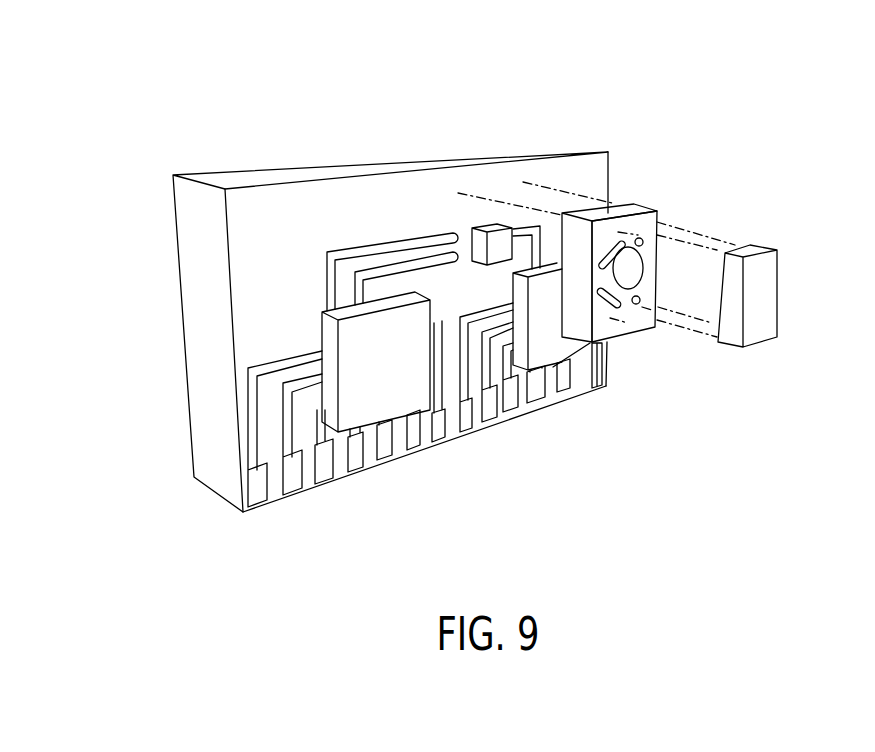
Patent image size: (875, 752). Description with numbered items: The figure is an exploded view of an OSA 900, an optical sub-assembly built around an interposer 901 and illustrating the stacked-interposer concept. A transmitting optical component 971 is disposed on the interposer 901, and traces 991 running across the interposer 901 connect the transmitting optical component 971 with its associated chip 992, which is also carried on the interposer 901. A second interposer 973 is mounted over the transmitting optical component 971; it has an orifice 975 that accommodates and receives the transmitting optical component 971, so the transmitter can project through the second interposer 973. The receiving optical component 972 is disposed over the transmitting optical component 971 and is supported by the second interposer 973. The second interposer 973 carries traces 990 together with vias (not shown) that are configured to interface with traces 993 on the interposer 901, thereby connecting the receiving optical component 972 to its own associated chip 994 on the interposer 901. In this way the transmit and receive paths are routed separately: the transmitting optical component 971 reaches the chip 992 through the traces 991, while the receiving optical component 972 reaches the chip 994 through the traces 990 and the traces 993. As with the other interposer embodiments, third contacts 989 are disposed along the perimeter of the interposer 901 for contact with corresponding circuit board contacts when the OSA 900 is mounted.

The OSA 900 is at (192, 113).
The interposer 901 is at (207, 437).
The third contacts 989 is at (262, 501).
The chip 994 is at (372, 403).
The traces 993 is at (453, 232).
The transmitting optical component 971 is at (478, 226).
The traces 991 is at (525, 230).
The chip 992 is at (545, 350).
The traces 990 is at (600, 256).
The second interposer 973 is at (657, 214).
The orifice 975 is at (628, 282).
The receiving optical component 972 is at (770, 284).